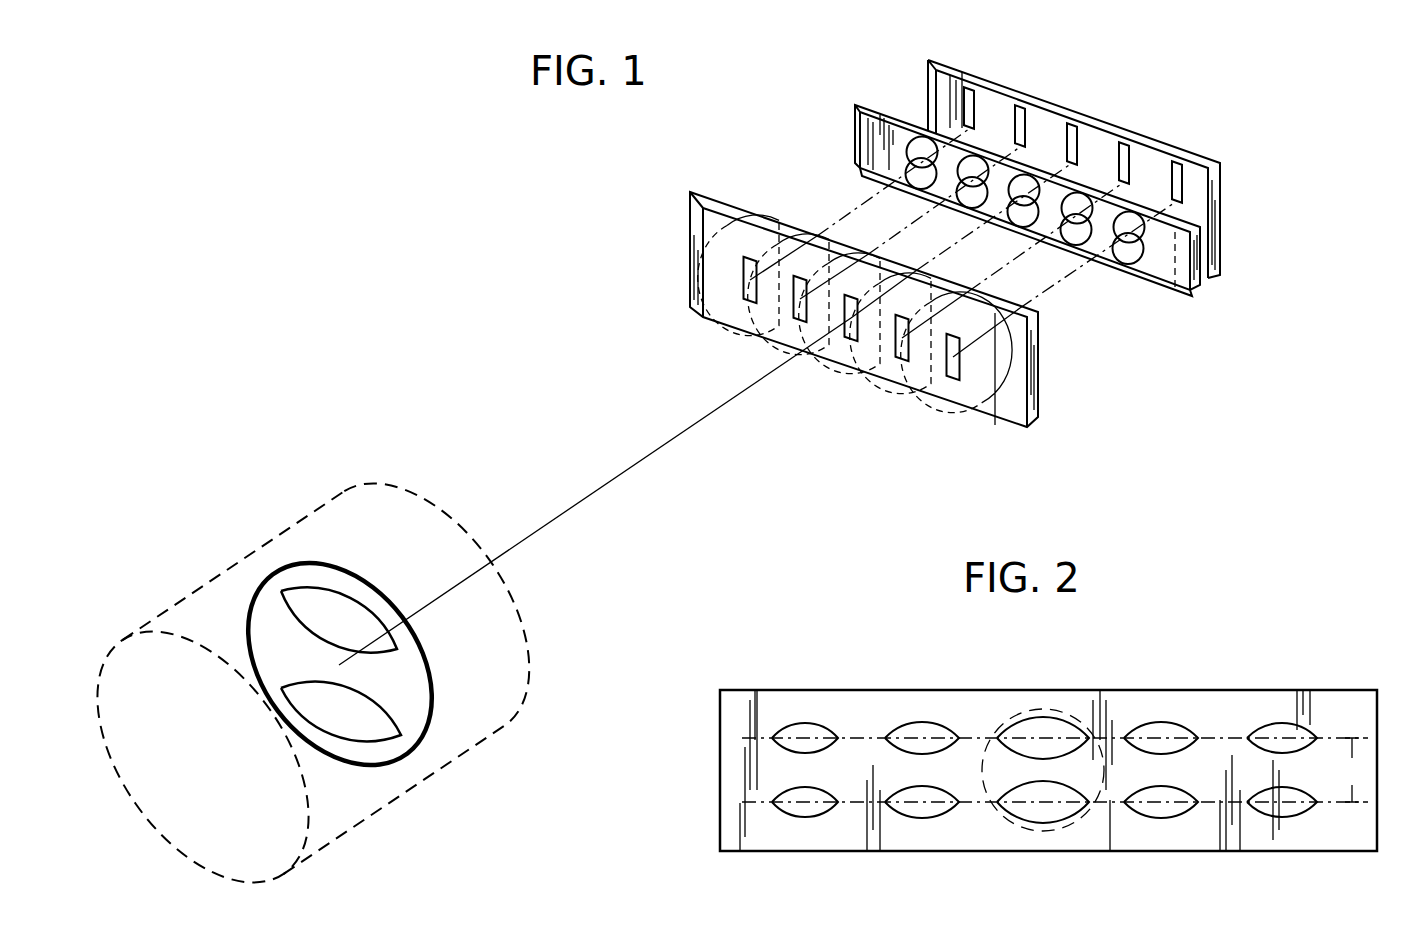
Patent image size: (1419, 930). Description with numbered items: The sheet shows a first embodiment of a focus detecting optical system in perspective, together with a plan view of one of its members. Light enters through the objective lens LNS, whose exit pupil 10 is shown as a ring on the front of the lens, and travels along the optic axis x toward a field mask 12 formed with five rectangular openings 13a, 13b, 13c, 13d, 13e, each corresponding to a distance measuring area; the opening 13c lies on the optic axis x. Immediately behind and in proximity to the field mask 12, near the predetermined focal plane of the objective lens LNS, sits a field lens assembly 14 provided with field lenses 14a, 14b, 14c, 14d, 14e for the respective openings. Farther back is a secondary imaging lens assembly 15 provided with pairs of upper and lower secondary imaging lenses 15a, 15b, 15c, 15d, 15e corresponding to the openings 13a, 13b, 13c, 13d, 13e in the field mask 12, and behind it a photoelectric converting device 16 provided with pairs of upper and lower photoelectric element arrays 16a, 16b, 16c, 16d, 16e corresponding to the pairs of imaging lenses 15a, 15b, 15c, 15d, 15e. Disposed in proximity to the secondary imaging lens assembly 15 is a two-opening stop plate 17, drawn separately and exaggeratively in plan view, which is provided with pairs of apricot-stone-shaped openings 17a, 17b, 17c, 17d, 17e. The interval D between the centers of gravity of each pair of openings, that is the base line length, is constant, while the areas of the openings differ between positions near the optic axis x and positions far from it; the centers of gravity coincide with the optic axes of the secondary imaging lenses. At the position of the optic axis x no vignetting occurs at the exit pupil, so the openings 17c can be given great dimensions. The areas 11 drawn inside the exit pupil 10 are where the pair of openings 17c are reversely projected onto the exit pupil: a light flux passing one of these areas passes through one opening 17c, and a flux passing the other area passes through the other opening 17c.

In FIG. 1, the objective lens LNS is at (343, 510).
In FIG. 1, the exit pupil 10 is at (353, 575).
In FIG. 1, the areas of reverse projection of openings 11 is at (377, 732).
In FIG. 1, the optic axis x is at (637, 466).
In FIG. 1, the field mask 12 is at (993, 425).
In FIG. 1, the rectangular opening 13a is at (742, 302).
In FIG. 1, the rectangular opening 13b is at (793, 323).
In FIG. 1, the rectangular opening 13c is at (847, 341).
In FIG. 1, the rectangular opening 13d is at (897, 361).
In FIG. 1, the rectangular opening 13e is at (950, 378).
In FIG. 1, the field lens assembly 14 is at (894, 347).
In FIG. 1, the field lens 14a is at (753, 220).
In FIG. 1, the field lens 14b is at (812, 238).
In FIG. 1, the field lens 14c is at (867, 258).
In FIG. 1, the field lens 14d is at (938, 285).
In FIG. 1, the field lens 14e is at (1033, 308).
In FIG. 1, the secondary imaging lens assembly 15 is at (1202, 288).
In FIG. 1, the pair of secondary imaging lenses 15a is at (905, 178).
In FIG. 1, the pair of secondary imaging lenses 15b is at (964, 200).
In FIG. 1, the pair of secondary imaging lenses 15c is at (1030, 226).
In FIG. 1, the pair of secondary imaging lenses 15d is at (1080, 245).
In FIG. 1, the pair of secondary imaging lenses 15e is at (1130, 264).
In FIG. 1, the photoelectric converting device 16 is at (1222, 205).
In FIG. 1, the pair of photoelectric element arrays 16a is at (973, 80).
In FIG. 1, the pair of photoelectric element arrays 16b is at (1027, 98).
In FIG. 1, the pair of photoelectric element arrays 16c is at (1080, 120).
In FIG. 1, the pair of photoelectric element arrays 16d is at (1131, 138).
In FIG. 1, the pair of photoelectric element arrays 16e is at (1187, 158).
In FIG. 1, the two-opening stop plate 17 is at (1190, 298).
In FIG. 2, the two-opening stop plate 17 is at (1350, 703).
In FIG. 2, the pair of apricot-stone-shaped openings 17a is at (785, 797).
In FIG. 2, the pair of apricot-stone-shaped openings 17b is at (902, 795).
In FIG. 2, the pair of apricot-stone-shaped openings 17c is at (1012, 793).
In FIG. 2, the pair of apricot-stone-shaped openings 17d is at (1138, 795).
In FIG. 2, the pair of apricot-stone-shaped openings 17e is at (1267, 793).
In FIG. 2, the interval between centers of gravity D is at (1353, 770).